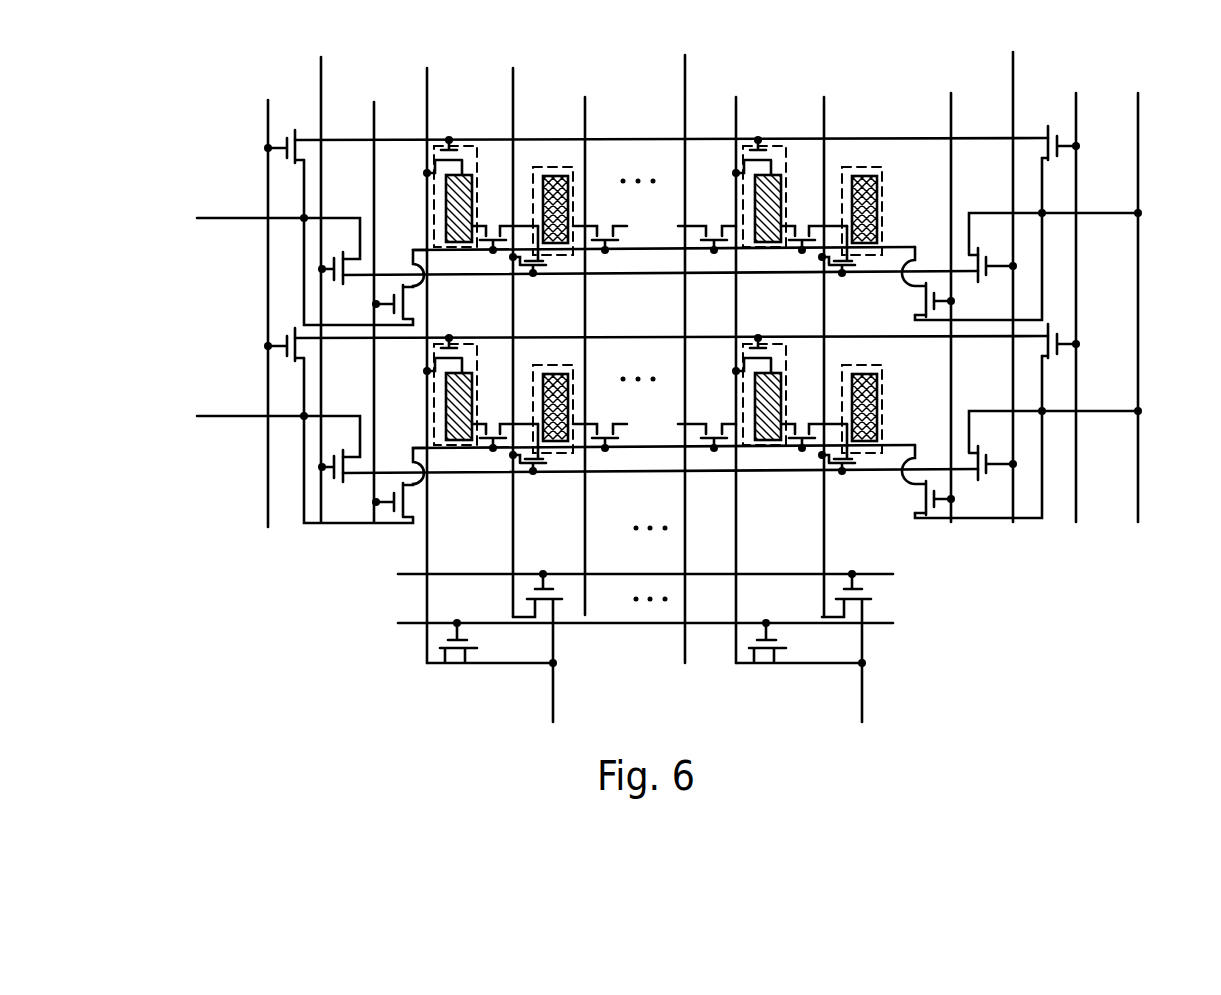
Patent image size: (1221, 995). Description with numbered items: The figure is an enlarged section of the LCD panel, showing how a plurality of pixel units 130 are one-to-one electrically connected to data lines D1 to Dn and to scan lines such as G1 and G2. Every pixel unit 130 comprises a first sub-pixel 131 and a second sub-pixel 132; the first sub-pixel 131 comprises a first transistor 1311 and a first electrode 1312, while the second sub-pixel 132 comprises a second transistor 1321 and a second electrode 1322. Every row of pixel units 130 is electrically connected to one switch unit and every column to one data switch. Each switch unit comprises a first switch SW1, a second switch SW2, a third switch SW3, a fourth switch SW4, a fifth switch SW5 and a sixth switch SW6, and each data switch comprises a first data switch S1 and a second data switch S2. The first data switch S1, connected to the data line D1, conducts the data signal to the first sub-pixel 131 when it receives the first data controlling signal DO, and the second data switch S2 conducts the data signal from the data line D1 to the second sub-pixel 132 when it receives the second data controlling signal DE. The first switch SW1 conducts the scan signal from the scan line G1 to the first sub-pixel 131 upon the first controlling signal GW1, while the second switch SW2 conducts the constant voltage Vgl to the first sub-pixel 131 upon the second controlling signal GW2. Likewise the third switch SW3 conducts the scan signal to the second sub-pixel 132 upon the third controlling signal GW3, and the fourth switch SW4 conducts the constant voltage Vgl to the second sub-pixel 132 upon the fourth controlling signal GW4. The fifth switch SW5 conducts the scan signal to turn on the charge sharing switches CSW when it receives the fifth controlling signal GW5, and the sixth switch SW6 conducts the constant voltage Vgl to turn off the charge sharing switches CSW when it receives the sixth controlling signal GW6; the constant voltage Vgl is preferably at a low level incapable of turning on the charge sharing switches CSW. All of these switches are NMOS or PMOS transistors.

The first controlling signal GW1 is at (264, 301).
The second controlling signal GW2 is at (1073, 296).
The third controlling signal GW3 is at (317, 278).
The fourth controlling signal GW4 is at (1013, 276).
The fifth controlling signal GW5 is at (375, 298).
The sixth controlling signal GW6 is at (945, 296).
The constant voltage Vgl is at (1150, 296).
The scan line G1 is at (652, 234).
The scan line G2 is at (652, 431).
The first switch SW1 is at (292, 136).
The second switch SW2 is at (1050, 131).
The third switch SW3 is at (318, 267).
The fourth switch SW4 is at (987, 277).
The fifth switch SW5 is at (404, 291).
The sixth switch SW6 is at (910, 282).
The charge sharing switch CSW is at (490, 226).
The pixel unit 130 is at (420, 154).
The first sub-pixel 131 is at (431, 192).
The first transistor 1311 is at (449, 141).
The first electrode 1312 is at (448, 244).
The second sub-pixel 132 is at (575, 197).
The second transistor 1321 is at (535, 275).
The second electrode 1322 is at (546, 175).
The second data controlling signal DE is at (624, 577).
The first data controlling signal DO is at (624, 627).
The first data switch S1 is at (644, 658).
The second data switch S2 is at (692, 605).
The data line D1 is at (544, 707).
The data line Dn is at (864, 707).